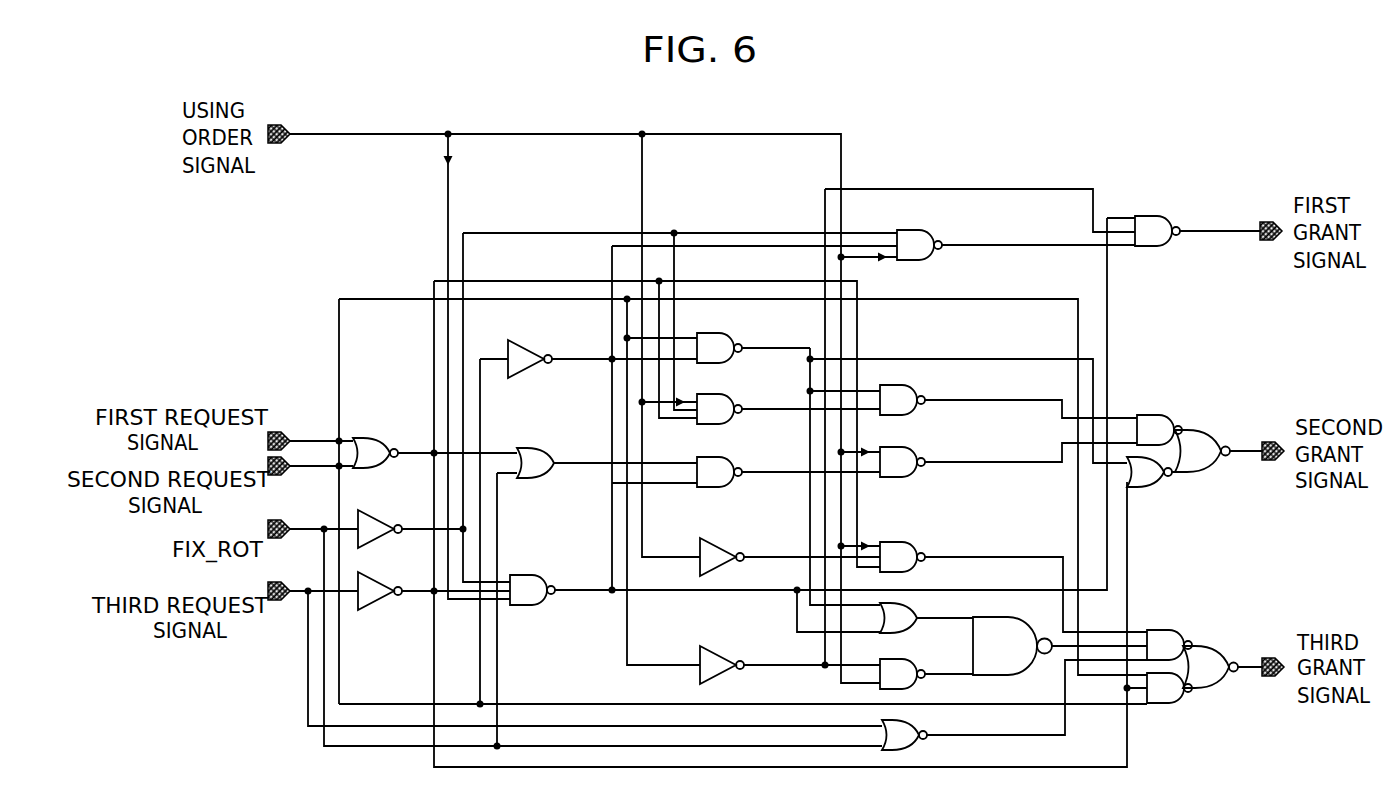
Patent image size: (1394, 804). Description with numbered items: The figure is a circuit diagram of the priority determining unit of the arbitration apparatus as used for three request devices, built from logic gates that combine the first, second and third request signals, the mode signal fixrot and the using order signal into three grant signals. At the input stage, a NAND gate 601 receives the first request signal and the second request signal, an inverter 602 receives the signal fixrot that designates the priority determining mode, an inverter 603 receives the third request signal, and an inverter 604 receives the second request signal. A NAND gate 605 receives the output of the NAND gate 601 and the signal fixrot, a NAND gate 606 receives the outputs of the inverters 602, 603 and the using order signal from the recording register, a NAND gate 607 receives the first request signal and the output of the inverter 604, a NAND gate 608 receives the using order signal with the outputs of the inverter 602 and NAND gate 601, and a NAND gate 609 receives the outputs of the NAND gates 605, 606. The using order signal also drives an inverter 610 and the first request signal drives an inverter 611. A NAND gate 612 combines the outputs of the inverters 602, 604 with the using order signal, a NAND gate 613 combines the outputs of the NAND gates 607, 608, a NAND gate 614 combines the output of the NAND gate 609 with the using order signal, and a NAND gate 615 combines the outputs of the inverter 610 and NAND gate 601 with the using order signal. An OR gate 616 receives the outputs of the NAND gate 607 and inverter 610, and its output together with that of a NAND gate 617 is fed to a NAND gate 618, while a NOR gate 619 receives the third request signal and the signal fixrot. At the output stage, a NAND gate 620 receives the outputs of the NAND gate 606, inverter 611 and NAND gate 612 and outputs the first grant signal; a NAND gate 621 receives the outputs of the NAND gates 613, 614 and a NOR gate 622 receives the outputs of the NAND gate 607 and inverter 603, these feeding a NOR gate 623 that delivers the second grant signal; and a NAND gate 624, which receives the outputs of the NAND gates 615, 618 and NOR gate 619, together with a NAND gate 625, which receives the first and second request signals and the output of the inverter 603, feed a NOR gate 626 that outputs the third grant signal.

The NAND gate 601 is at (380, 441).
The inverter 602 is at (380, 518).
The inverter 603 is at (380, 579).
The inverter 604 is at (528, 351).
The NAND gate 605 is at (538, 450).
The NAND gate 606 is at (540, 576).
The NAND gate 607 is at (731, 335).
The NAND gate 608 is at (731, 396).
The NAND gate 609 is at (731, 459).
The inverter 610 is at (728, 551).
The inverter 611 is at (728, 659).
The NAND gate 612 is at (931, 232).
The NAND gate 613 is at (917, 376).
The NAND gate 614 is at (914, 449).
The NAND gate 615 is at (914, 544).
The OR gate 616 is at (915, 594).
The NAND gate 617 is at (914, 661).
The NAND gate 618 is at (1006, 618).
The NOR gate 619 is at (915, 712).
The NAND gate 620 is at (1150, 216).
The NAND gate 621 is at (1170, 416).
The NOR gate 622 is at (1155, 487).
The NOR gate 623 is at (1216, 436).
The NAND gate 624 is at (1180, 631).
The NAND gate 625 is at (1170, 704).
The NOR gate 626 is at (1229, 639).